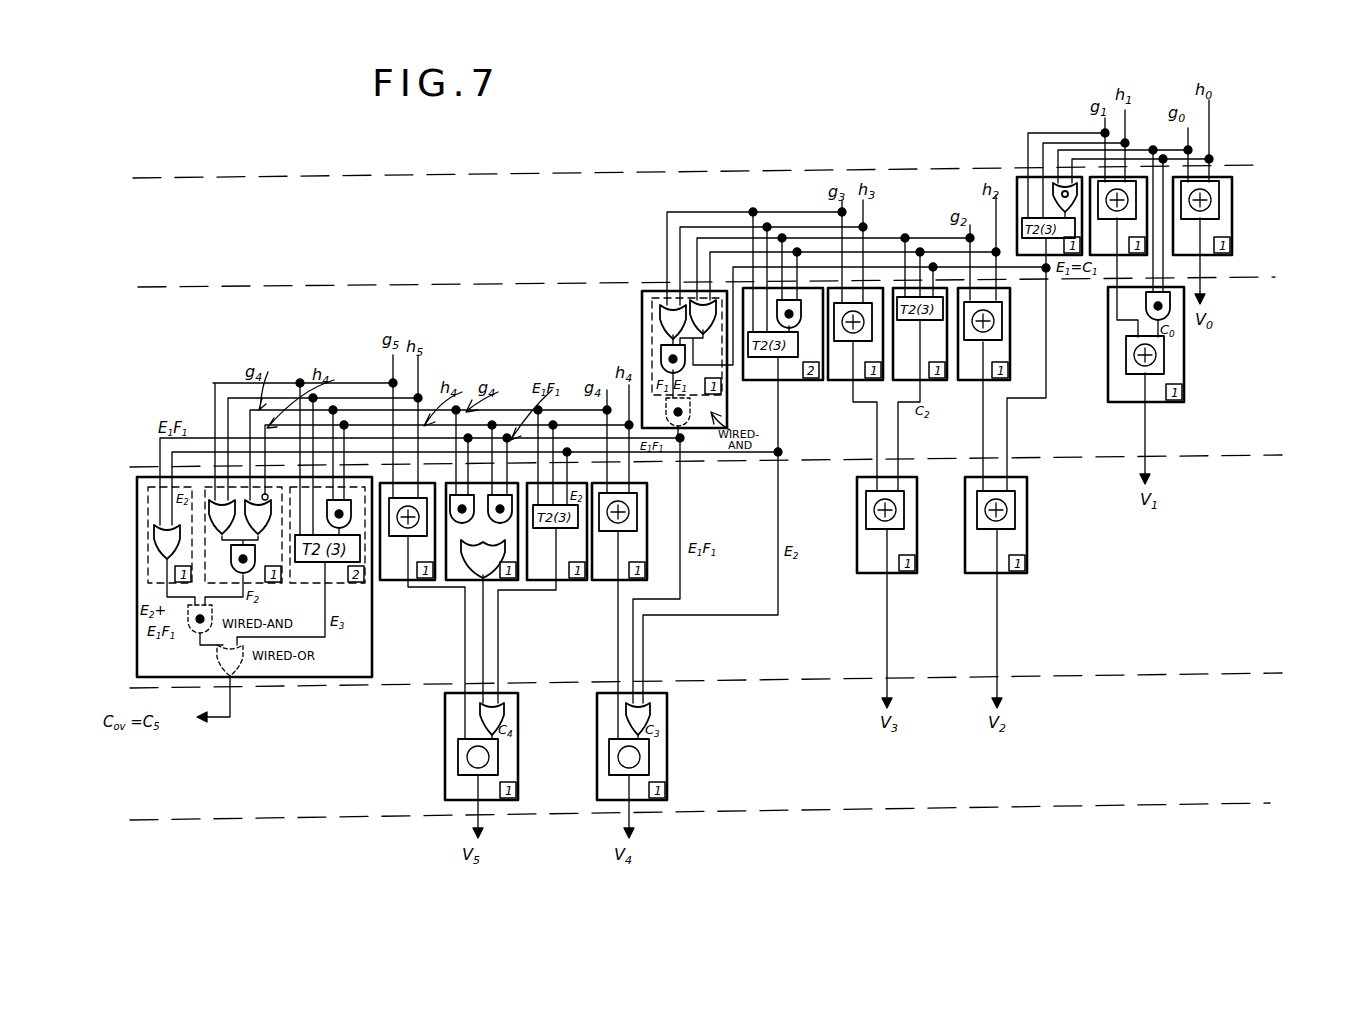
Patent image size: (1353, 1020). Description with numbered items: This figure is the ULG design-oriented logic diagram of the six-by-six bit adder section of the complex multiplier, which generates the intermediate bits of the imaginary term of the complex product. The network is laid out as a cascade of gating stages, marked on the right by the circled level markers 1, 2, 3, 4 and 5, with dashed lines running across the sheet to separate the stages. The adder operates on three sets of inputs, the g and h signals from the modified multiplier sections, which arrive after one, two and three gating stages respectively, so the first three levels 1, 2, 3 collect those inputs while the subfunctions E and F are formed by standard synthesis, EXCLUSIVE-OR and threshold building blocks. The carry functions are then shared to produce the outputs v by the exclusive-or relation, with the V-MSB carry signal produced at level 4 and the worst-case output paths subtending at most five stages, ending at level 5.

The first logic level 1 is at (719, 162).
The second logic level 2 is at (725, 277).
The third logic level 3 is at (724, 455).
The fourth logic level 4 is at (727, 673).
The fifth logic level 5 is at (723, 803).